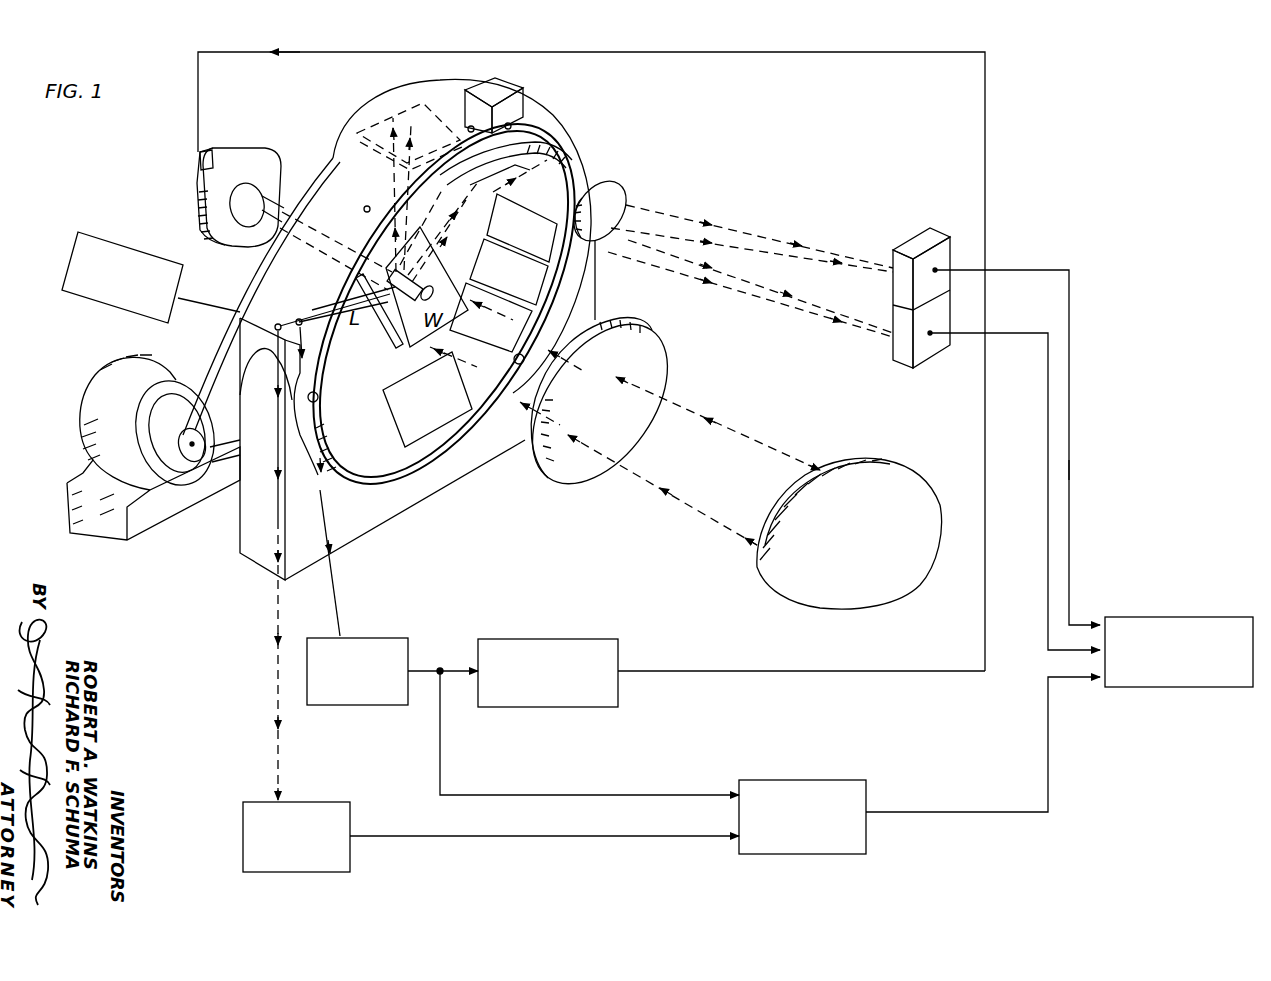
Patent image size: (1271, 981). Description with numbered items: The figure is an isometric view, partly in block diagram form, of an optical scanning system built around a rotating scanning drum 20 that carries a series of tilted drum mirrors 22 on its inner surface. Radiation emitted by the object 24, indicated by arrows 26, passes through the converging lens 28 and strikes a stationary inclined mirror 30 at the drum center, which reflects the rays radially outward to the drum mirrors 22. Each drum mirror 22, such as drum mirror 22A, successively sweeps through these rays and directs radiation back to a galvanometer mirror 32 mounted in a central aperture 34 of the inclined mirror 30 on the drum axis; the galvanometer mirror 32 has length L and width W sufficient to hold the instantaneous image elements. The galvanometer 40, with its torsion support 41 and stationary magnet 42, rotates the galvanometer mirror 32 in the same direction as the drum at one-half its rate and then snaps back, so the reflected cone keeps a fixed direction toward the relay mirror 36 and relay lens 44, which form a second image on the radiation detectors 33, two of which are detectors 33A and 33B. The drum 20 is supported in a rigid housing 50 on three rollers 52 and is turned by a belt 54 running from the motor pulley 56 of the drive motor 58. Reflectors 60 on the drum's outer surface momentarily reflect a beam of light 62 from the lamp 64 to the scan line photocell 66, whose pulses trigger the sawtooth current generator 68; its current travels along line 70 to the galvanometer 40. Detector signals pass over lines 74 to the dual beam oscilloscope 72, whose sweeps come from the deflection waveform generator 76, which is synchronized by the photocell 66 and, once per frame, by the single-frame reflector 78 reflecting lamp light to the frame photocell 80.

The scanning drum 20 is at (332, 160).
The drum mirrors 22 is at (525, 231).
The drum mirror 22A is at (397, 112).
The object 24 is at (882, 463).
The arrows 26 is at (718, 420).
The converging lens 28 is at (653, 343).
The inclined mirror 30 is at (400, 343).
The galvanometer mirror 32 is at (335, 308).
The radiation detectors 33 is at (906, 243).
The radiation detector 33A is at (936, 230).
The radiation detector 33B is at (903, 353).
The central aperture 34 is at (410, 303).
The relay mirror 36 is at (553, 160).
The galvanometer 40 is at (312, 250).
The torsion support 41 is at (392, 282).
The stationary magnet 42 is at (205, 198).
The relay lens 44 is at (598, 238).
The housing 50 is at (364, 518).
The rollers 52 is at (511, 124).
The belt 54 is at (214, 375).
The motor pulley 56 is at (190, 460).
The drive motor 58 is at (88, 398).
The reflectors 60 is at (469, 127).
The beam of light 62 is at (333, 592).
The lamp 64 is at (98, 305).
The scan line photocell 66 is at (372, 638).
The sawtooth current generator 68 is at (536, 639).
The line 70 is at (710, 671).
The dual beam oscilloscope 72 is at (1146, 617).
The lines 74 is at (1048, 470).
The deflection waveform generator 76 is at (866, 788).
The single-frame reflector 78 is at (275, 333).
The frame photocell 80 is at (333, 802).